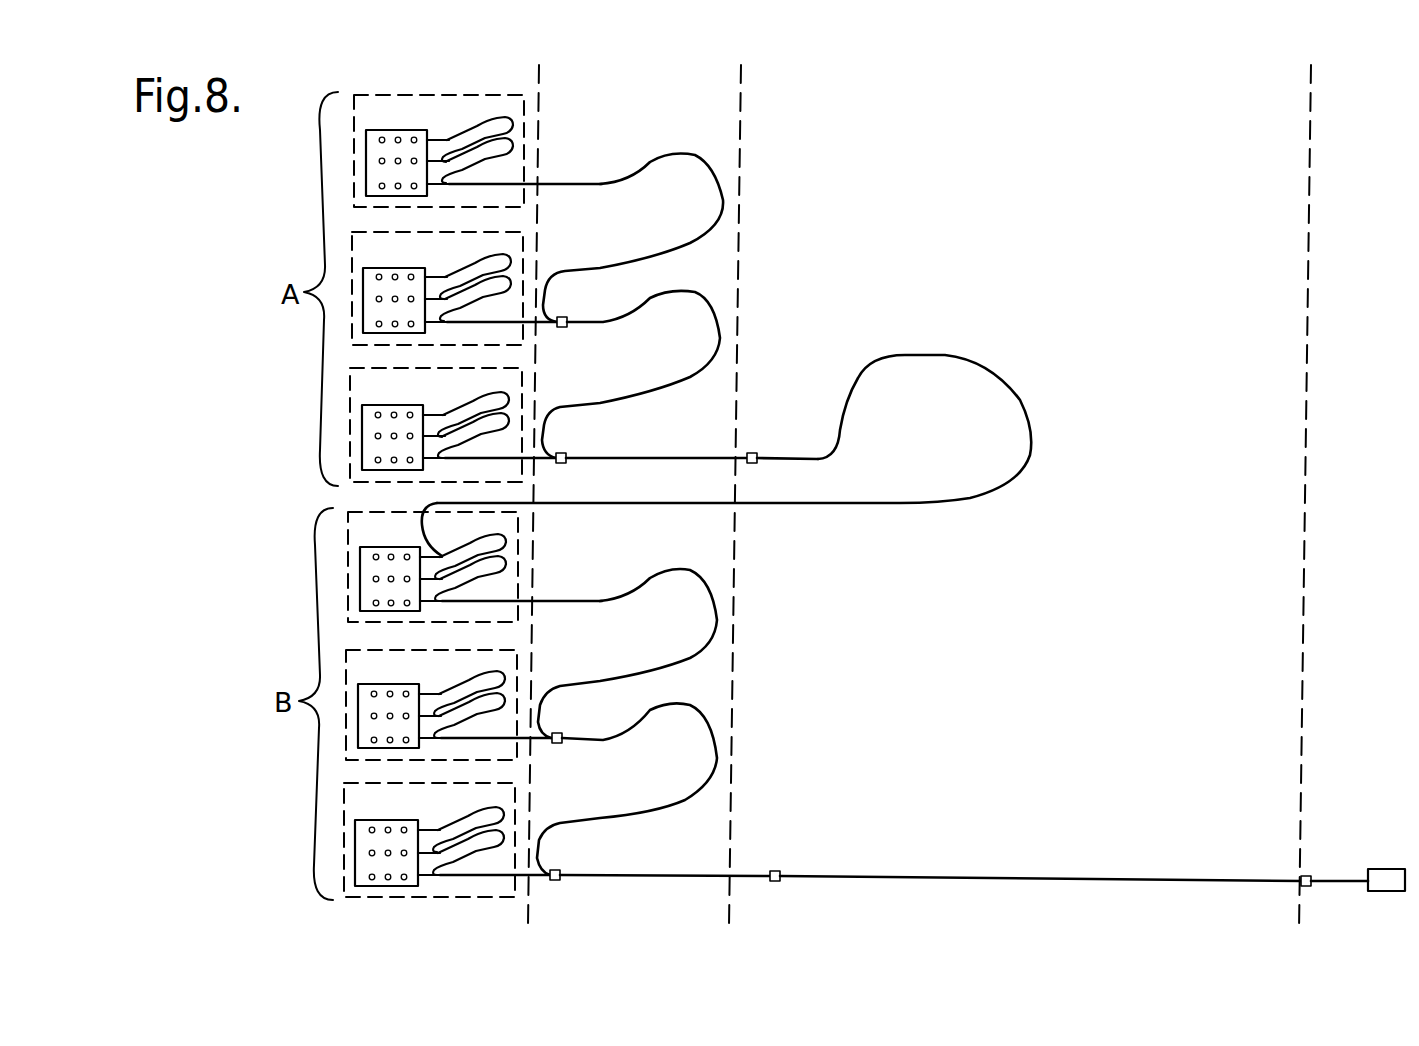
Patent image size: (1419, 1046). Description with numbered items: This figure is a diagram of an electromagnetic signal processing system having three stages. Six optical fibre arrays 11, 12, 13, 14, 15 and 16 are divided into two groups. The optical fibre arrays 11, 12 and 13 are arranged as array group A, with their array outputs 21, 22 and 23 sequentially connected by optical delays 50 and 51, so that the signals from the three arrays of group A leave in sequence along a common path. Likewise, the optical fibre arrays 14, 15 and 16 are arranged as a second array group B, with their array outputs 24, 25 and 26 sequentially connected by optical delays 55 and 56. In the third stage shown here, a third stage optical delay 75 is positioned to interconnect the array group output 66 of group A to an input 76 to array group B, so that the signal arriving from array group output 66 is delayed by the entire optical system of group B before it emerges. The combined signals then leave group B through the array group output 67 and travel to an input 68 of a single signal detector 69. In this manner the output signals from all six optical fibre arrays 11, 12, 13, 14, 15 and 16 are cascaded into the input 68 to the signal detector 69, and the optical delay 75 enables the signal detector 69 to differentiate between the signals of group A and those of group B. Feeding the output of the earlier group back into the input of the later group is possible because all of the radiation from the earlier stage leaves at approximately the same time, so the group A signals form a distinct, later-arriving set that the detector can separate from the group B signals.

The optical fibre array 11 is at (414, 126).
The optical fibre array 12 is at (411, 264).
The optical fibre array 13 is at (410, 401).
The optical fibre array 14 is at (408, 543).
The optical fibre array 15 is at (406, 680).
The optical fibre array 16 is at (403, 816).
The array output 21 is at (567, 184).
The array output 22 is at (560, 327).
The array output 23 is at (560, 463).
The array output 24 is at (542, 604).
The array output 25 is at (542, 742).
The array output 26 is at (557, 881).
The optical delay 50 is at (722, 210).
The optical delay 51 is at (720, 340).
The optical delay 55 is at (718, 620).
The optical delay 56 is at (718, 758).
The array group output 66 is at (685, 456).
The array group output 67 is at (668, 873).
The input 68 is at (1175, 878).
The signal detector 69 is at (1376, 892).
The third stage optical delay 75 is at (985, 366).
The input 76 is at (425, 521).